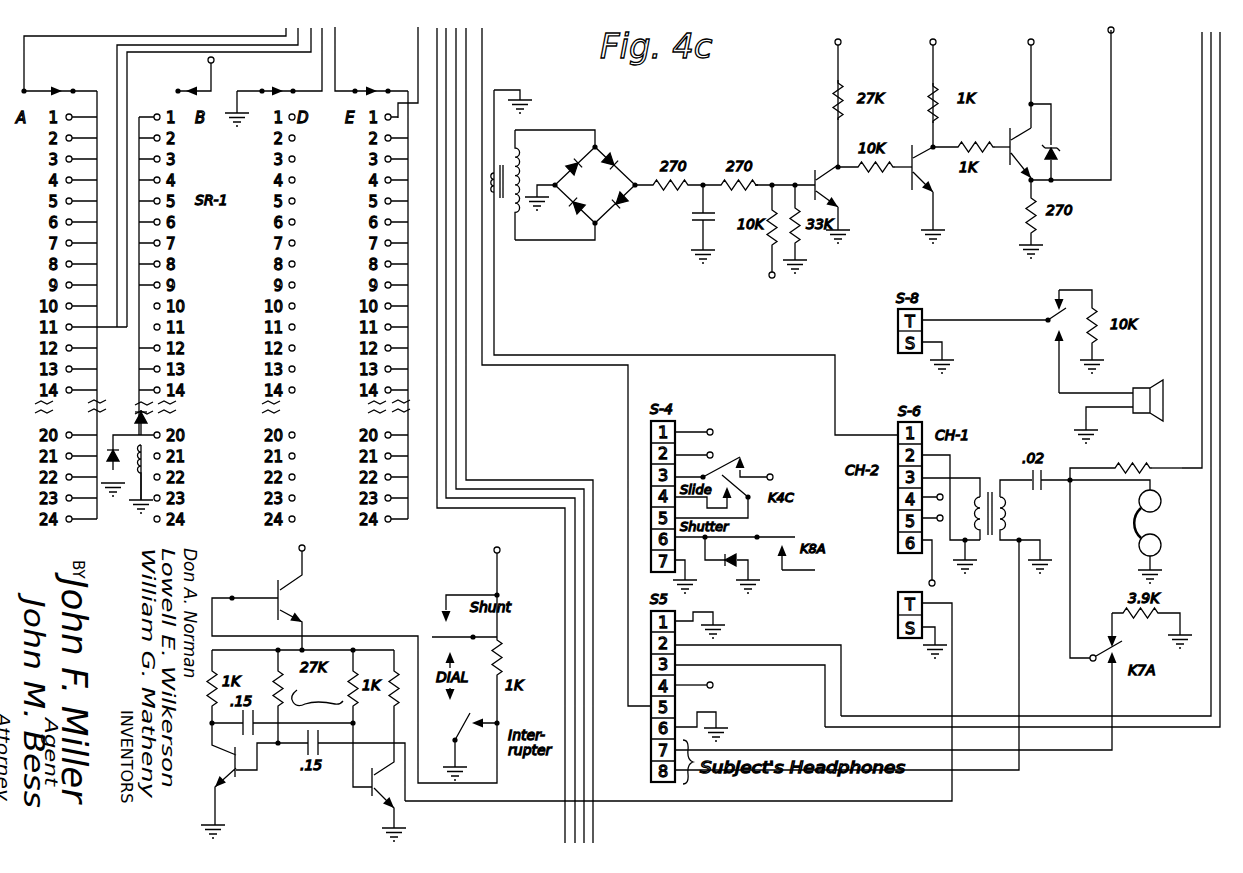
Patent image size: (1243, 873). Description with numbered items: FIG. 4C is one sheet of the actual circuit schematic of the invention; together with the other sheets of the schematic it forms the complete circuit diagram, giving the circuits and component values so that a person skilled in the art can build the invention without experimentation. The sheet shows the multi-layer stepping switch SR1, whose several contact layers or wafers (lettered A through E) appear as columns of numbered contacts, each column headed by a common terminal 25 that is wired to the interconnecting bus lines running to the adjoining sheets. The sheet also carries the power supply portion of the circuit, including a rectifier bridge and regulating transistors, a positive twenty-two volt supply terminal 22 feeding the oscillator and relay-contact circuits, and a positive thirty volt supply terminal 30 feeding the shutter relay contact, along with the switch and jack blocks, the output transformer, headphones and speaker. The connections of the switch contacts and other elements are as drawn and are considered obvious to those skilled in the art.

The +22 volt supply terminal 22 is at (616, 614).
The connector common terminal 25 is at (214, 177).
The +30 volt supply terminal 30 is at (799, 576).